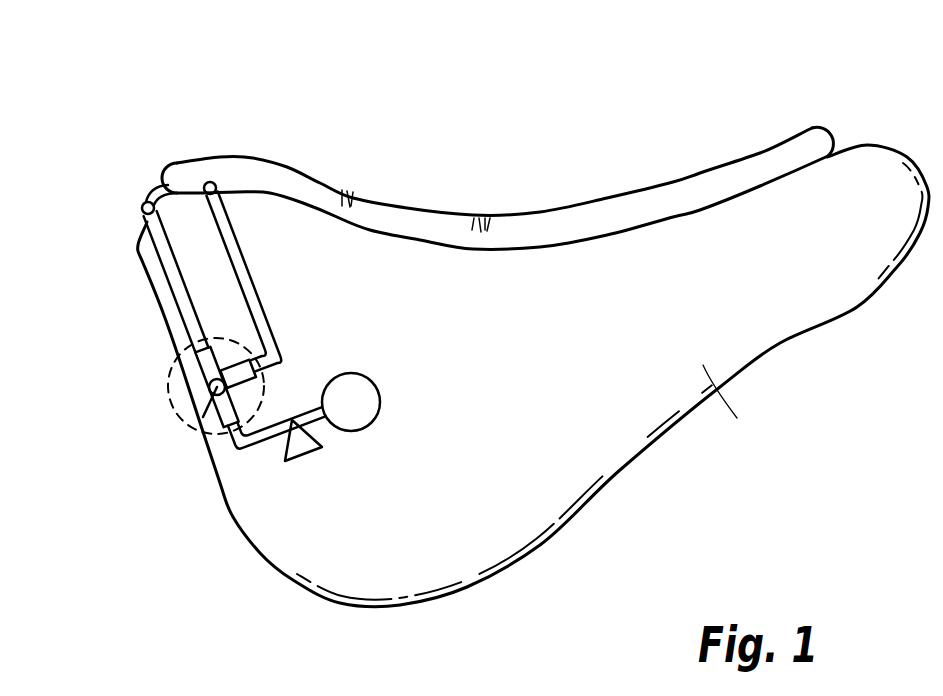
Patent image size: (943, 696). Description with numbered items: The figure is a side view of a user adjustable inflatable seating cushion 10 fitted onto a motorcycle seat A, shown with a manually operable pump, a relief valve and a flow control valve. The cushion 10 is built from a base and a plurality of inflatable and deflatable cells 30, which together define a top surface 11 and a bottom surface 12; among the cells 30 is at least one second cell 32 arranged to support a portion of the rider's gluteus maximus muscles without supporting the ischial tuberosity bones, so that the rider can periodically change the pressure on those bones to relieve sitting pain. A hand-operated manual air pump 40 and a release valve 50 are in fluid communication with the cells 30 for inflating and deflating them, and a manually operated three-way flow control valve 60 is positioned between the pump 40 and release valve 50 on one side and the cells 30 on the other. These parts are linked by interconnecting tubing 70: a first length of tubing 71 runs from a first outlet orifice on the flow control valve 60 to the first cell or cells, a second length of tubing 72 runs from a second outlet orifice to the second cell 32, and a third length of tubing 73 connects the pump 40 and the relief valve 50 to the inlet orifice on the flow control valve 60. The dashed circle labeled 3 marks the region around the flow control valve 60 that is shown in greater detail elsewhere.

The seat cushion 10 is at (735, 100).
The top surface 11 is at (660, 188).
The bottom surface 12 is at (623, 237).
The cells 30 is at (489, 215).
The second cell 32 is at (475, 217).
The pump 40 is at (380, 403).
The release valve 50 is at (310, 453).
The flow control valve 60 is at (207, 390).
The interconnecting tubing 70 is at (243, 358).
The first length of tubing 71 is at (182, 313).
The second length of tubing 72 is at (257, 286).
The third length of tubing 73 is at (246, 451).
The detail area of FIG. 3 is at (170, 375).
The motorcycle seat A is at (732, 401).